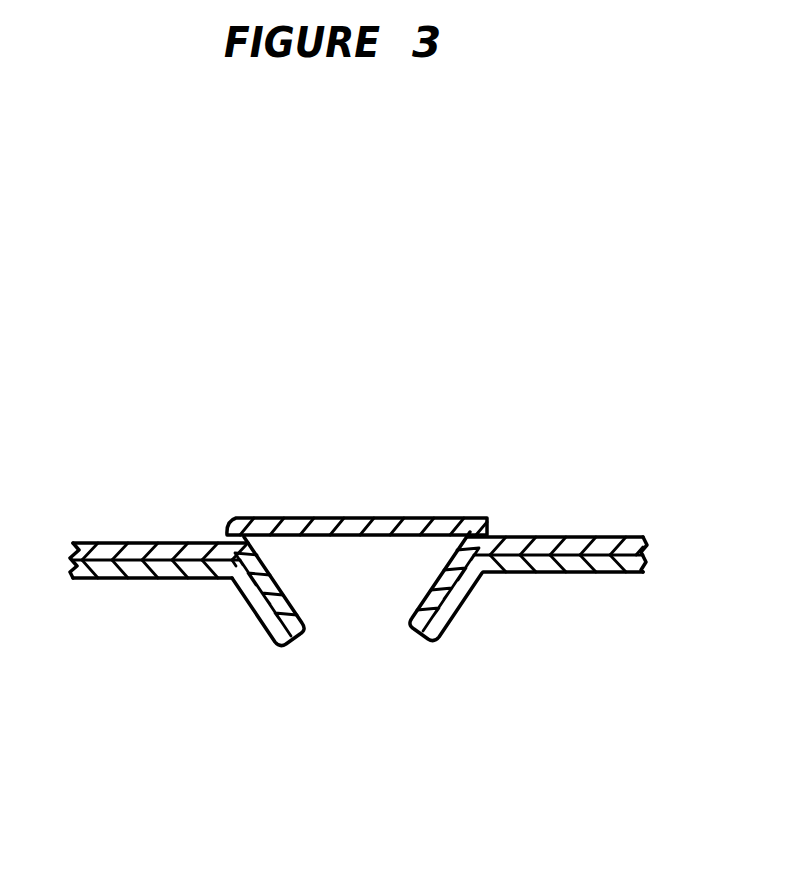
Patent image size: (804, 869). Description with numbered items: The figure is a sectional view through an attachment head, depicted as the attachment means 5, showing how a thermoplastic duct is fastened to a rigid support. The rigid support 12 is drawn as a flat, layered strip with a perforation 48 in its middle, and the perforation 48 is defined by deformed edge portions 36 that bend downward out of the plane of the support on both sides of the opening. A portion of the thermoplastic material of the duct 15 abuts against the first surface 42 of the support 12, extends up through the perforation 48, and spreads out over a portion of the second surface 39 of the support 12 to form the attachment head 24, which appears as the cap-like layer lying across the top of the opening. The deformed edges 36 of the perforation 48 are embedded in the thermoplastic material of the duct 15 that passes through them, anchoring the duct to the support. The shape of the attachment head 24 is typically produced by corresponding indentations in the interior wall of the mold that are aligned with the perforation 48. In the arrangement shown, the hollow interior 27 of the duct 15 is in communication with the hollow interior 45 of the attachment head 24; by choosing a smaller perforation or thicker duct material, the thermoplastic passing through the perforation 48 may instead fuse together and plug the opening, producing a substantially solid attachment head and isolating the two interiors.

The attachment means 5 is at (214, 771).
The rigid support 12 is at (138, 543).
The duct 15 is at (120, 580).
The attachment head 24 is at (345, 520).
The hollow interior of duct 27 is at (527, 768).
The deformed edge portions 36 is at (247, 603).
The second surface 39 is at (163, 543).
The first surface 42 is at (191, 580).
The hollow interior of attachment head 45 is at (360, 578).
The perforation 48 is at (358, 637).